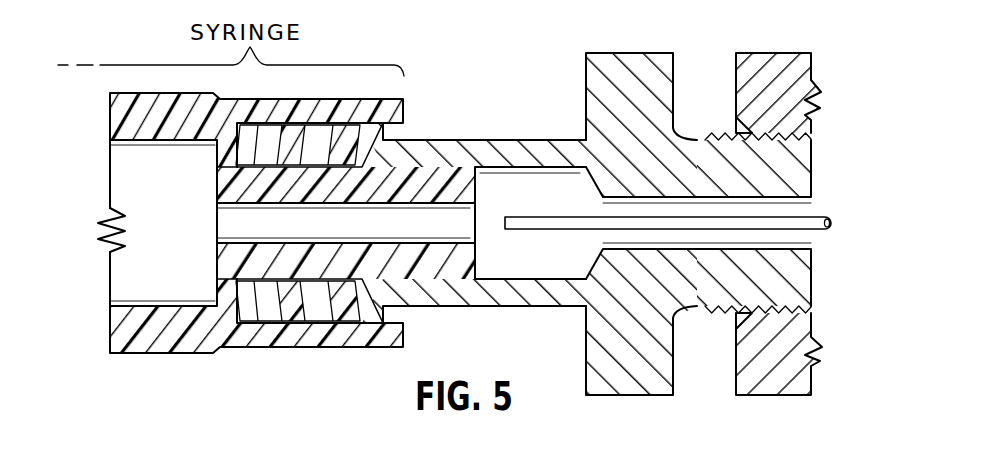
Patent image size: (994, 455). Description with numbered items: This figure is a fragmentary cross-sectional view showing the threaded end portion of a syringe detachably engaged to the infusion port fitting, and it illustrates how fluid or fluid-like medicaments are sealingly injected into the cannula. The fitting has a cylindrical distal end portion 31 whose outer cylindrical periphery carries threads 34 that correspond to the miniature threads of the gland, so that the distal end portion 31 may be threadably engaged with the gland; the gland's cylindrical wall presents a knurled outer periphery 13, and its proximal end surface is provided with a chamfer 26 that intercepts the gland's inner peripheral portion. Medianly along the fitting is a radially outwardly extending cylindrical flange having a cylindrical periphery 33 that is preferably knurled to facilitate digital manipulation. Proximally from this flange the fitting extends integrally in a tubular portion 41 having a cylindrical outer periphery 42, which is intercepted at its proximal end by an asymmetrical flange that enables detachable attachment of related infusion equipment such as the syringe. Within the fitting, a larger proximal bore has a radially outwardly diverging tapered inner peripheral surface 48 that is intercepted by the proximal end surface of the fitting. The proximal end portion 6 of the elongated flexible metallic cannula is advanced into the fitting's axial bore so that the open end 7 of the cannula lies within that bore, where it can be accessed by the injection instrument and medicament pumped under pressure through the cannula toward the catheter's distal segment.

The proximal end portion 6 is at (555, 221).
The open end 7 is at (498, 219).
The knurled outer periphery 13 is at (770, 53).
The chamfer 26 is at (746, 320).
The cylindrical distal end portion 31 is at (796, 170).
The cylindrical periphery 33 is at (636, 53).
The threads 34 is at (710, 133).
The tubular portion 41 is at (491, 295).
The cylindrical outer periphery 42 is at (474, 140).
The tapered inner peripheral surface 48 is at (413, 287).